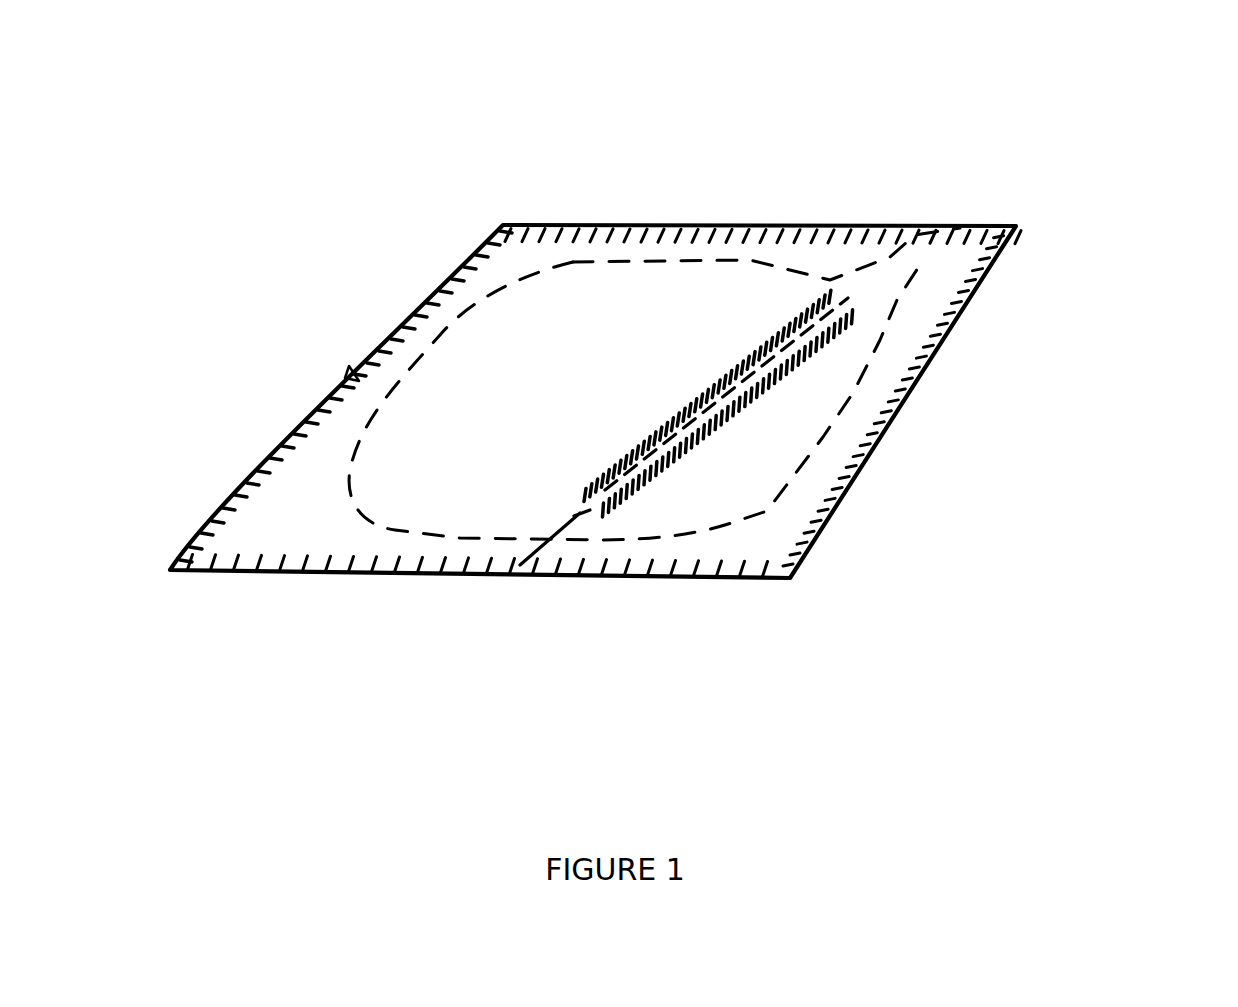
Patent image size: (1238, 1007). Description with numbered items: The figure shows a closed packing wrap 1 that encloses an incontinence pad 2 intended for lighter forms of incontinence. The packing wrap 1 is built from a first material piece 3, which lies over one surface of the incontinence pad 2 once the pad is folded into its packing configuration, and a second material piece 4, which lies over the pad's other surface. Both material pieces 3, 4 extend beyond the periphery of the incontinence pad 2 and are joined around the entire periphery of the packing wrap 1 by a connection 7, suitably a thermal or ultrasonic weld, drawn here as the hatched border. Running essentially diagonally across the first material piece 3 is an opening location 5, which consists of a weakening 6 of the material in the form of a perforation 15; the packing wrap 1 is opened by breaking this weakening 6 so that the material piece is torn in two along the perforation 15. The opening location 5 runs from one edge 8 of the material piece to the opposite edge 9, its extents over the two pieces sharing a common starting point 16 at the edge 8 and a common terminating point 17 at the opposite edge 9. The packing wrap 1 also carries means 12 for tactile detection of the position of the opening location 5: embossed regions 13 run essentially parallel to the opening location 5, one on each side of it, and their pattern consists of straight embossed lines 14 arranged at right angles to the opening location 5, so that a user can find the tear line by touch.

The packing wrap 1 is at (300, 517).
The incontinence pad 2 is at (620, 315).
The first material piece 3 is at (490, 347).
The second material piece 4 is at (423, 437).
The opening location 5 is at (888, 269).
The weakening 6 is at (747, 383).
The connection 7 is at (870, 440).
The edge 8 is at (463, 577).
The opposite edge 9 is at (781, 228).
The means for tactile detection 12 is at (824, 292).
The embossed regions 13 is at (627, 455).
The embossed lines 14 is at (663, 463).
The perforation 15 is at (583, 513).
The common starting point 16 is at (513, 580).
The common terminating point 17 is at (937, 215).